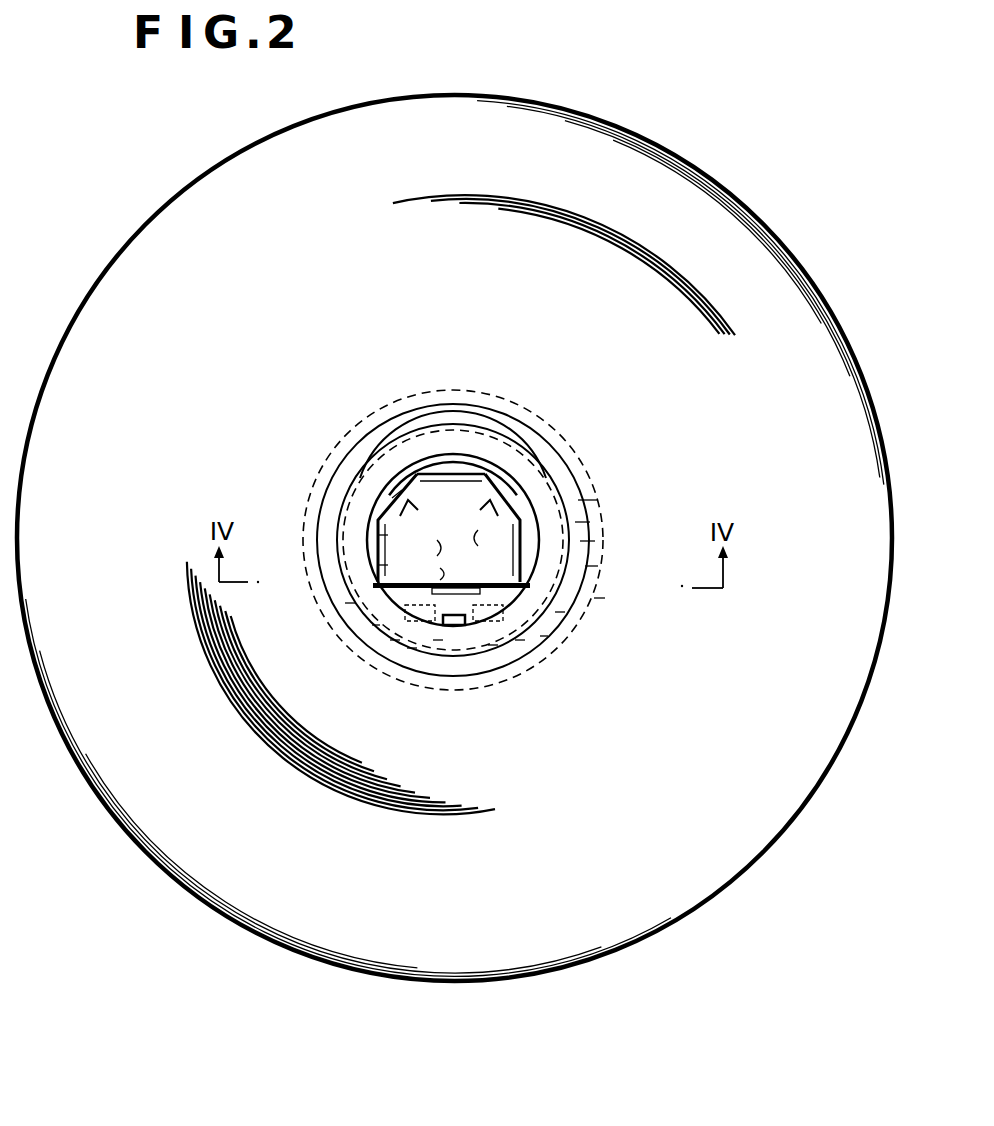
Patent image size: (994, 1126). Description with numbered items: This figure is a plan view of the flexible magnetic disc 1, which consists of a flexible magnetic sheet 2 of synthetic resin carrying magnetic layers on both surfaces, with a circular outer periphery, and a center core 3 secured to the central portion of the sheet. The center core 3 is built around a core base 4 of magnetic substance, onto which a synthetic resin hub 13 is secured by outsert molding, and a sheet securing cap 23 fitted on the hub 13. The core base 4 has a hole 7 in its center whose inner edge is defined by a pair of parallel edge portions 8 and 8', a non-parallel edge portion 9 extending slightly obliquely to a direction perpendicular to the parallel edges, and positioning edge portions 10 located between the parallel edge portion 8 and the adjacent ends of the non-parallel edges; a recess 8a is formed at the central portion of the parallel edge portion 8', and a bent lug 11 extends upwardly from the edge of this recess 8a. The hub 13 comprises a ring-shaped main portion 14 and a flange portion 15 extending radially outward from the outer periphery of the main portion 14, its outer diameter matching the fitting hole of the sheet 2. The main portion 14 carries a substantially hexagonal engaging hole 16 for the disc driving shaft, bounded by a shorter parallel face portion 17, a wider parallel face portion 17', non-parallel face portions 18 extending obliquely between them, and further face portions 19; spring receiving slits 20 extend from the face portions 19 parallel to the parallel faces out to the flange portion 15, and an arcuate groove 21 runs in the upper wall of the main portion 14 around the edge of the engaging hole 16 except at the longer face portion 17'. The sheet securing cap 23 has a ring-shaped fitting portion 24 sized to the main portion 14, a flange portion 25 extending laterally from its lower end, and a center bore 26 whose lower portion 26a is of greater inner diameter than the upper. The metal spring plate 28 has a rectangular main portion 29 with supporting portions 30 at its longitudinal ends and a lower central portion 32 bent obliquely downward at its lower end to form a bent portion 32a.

The flexible magnetic disc 1 is at (780, 134).
The flexible magnetic sheet 2 is at (790, 250).
The center core 3 is at (540, 432).
The core base 4 is at (597, 480).
The hole 7 is at (442, 474).
The parallel edge portion 8 is at (456, 465).
The parallel edge portion 8' is at (391, 690).
The wall projection 8a is at (438, 640).
The non-parallel edge portion 9 is at (502, 543).
The positioning edge portion 10 is at (520, 455).
The bent lug 11 is at (455, 627).
The hub 13 is at (565, 470).
The main portion 14 is at (537, 462).
The flange portion 15 is at (572, 490).
The engaging hole 16 is at (470, 475).
The parallel face portion 17 is at (449, 501).
The parallel face portion 17' is at (360, 672).
The non-parallel face portion 18 is at (330, 396).
The further face portion 19 is at (498, 566).
The spring receiving slit 20 is at (565, 612).
The arcuate groove 21 is at (388, 490).
The sheet securing cap 23 is at (590, 522).
The fitting portion 24 is at (598, 500).
The flange portion 25 is at (595, 541).
The center bore 26 is at (598, 566).
The lower portion 26a is at (605, 598).
The spring plate 28 is at (432, 536).
The main portion 29 is at (429, 564).
The supporting portion 30 is at (548, 636).
The lower central portion 32 is at (520, 640).
The bent portion 32a is at (493, 645).